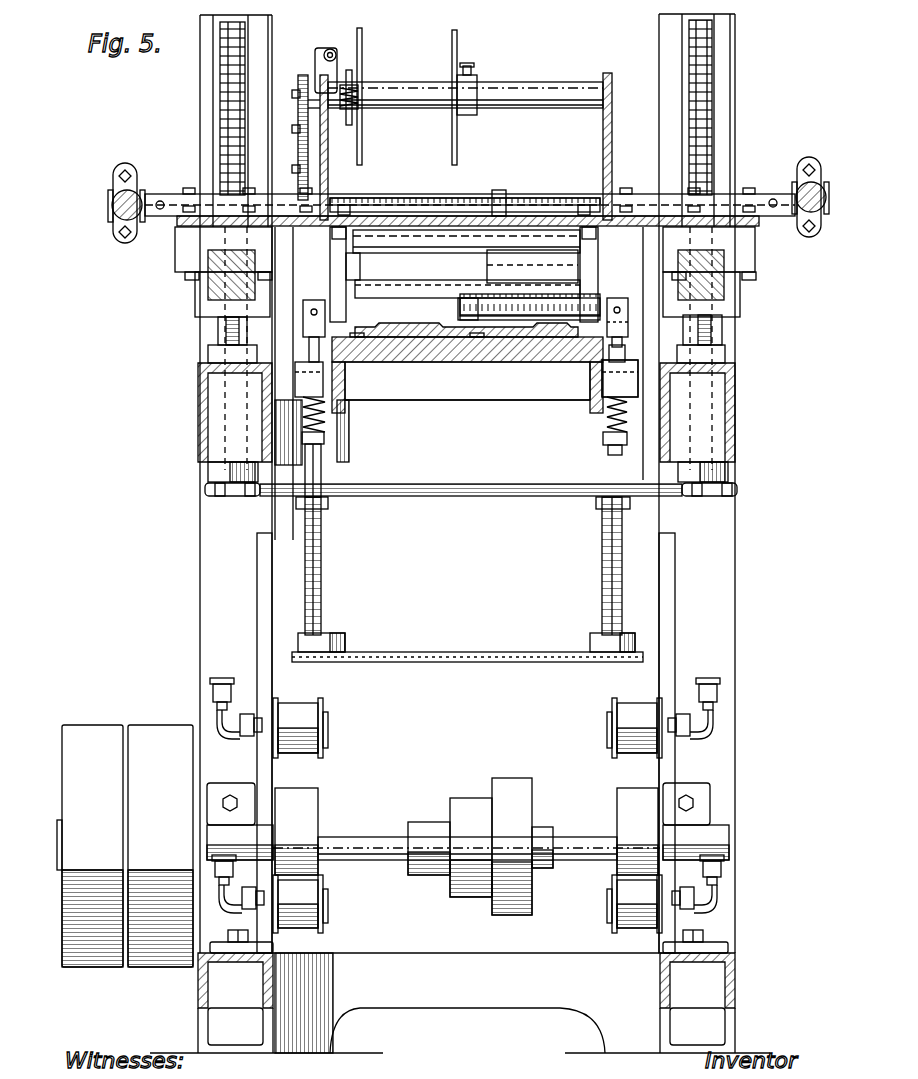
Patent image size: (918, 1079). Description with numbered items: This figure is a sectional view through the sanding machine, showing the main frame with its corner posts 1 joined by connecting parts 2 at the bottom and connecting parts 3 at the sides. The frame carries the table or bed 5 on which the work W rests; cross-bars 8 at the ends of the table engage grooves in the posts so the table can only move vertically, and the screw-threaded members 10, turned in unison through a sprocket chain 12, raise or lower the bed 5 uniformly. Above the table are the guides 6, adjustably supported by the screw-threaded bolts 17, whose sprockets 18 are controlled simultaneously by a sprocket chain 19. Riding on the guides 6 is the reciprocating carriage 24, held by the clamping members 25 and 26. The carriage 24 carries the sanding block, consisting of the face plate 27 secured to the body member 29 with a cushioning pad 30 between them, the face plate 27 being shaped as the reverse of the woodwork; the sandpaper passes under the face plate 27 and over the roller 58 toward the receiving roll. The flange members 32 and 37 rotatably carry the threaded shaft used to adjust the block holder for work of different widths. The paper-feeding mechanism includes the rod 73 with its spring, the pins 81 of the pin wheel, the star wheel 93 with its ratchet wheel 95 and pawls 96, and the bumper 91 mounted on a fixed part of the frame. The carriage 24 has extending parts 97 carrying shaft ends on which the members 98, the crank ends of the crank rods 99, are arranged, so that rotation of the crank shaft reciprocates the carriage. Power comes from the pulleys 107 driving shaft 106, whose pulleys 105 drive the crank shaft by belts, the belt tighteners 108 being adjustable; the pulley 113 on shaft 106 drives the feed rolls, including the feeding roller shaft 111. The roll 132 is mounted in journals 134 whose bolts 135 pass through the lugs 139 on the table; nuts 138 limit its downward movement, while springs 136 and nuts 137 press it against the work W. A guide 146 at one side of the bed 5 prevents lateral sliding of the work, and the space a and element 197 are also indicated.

The posts 1 is at (215, 580).
The connecting parts 2 is at (462, 1003).
The connecting parts 3 is at (198, 400).
The table or bed 5 is at (436, 362).
The guides 6 is at (225, 288).
The cross-bars 8 is at (283, 365).
The screw-threaded members or bolts 10 is at (323, 605).
The sprocket chain 12 is at (420, 652).
The screw-threaded members or bolts 17 is at (232, 66).
The sprockets 18 is at (232, 490).
The sprocket chain 19 is at (394, 496).
The reciprocating carriage 24 is at (212, 216).
The clamping member 25 is at (175, 256).
The clamping member 26 is at (205, 310).
The face plate 27 is at (452, 362).
The body member 29 is at (484, 265).
The cushioning pad 30 is at (530, 287).
The flange member 32 is at (332, 200).
The flange member 37 is at (603, 195).
The roller 58 is at (456, 254).
The rod 73 is at (330, 48).
The pins 81 is at (300, 132).
The bumper 91 is at (332, 186).
The star wheel 93 is at (520, 92).
The ratchet wheel 95 is at (362, 38).
The pawls 96 is at (467, 70).
The extending parts 97 is at (167, 194).
The members 98 is at (113, 190).
The crank rods 99 is at (112, 213).
The pulleys 105 is at (305, 803).
The shaft 106 is at (386, 835).
The pulleys 107 is at (100, 735).
The pulleys 108 is at (302, 712).
The shaft 111 is at (562, 290).
The pulley 113 is at (427, 830).
The roll 132 is at (562, 310).
The journals 134 is at (626, 318).
The threaded parts or bolts 135 is at (614, 455).
The springs 136 is at (627, 412).
The nuts 137 is at (603, 438).
The nuts 138 is at (624, 345).
The lugs 139 is at (616, 382).
The guide 146 is at (356, 362).
The pin 197 is at (477, 362).
The work W is at (410, 345).
The space a is at (509, 461).